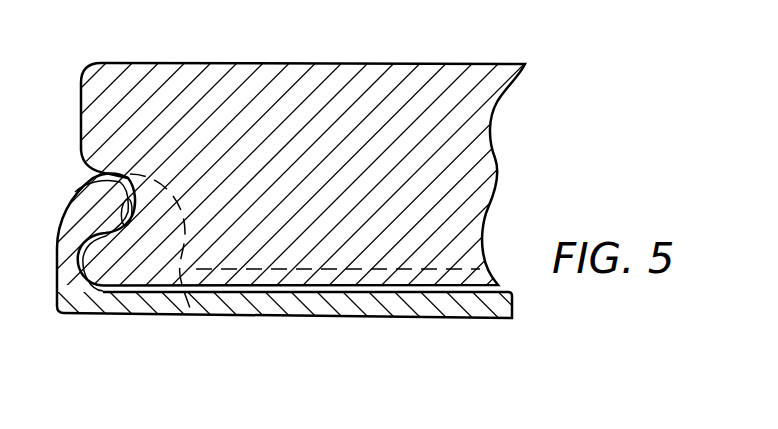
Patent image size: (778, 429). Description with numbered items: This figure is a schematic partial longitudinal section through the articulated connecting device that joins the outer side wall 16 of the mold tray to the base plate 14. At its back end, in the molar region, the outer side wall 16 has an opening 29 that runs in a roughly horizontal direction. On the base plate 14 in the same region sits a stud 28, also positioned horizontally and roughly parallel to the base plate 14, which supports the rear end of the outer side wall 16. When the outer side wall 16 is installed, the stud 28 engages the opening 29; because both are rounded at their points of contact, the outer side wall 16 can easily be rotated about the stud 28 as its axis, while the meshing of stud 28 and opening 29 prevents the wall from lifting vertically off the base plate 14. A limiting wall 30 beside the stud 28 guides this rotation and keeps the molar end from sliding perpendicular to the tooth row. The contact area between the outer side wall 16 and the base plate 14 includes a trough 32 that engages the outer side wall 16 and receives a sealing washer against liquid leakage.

The base plate 14 is at (423, 304).
The outer side wall 16 is at (333, 103).
The stud 28 is at (97, 206).
The opening 29 is at (82, 180).
The limiting wall 30 is at (197, 322).
The trough 32 is at (325, 292).